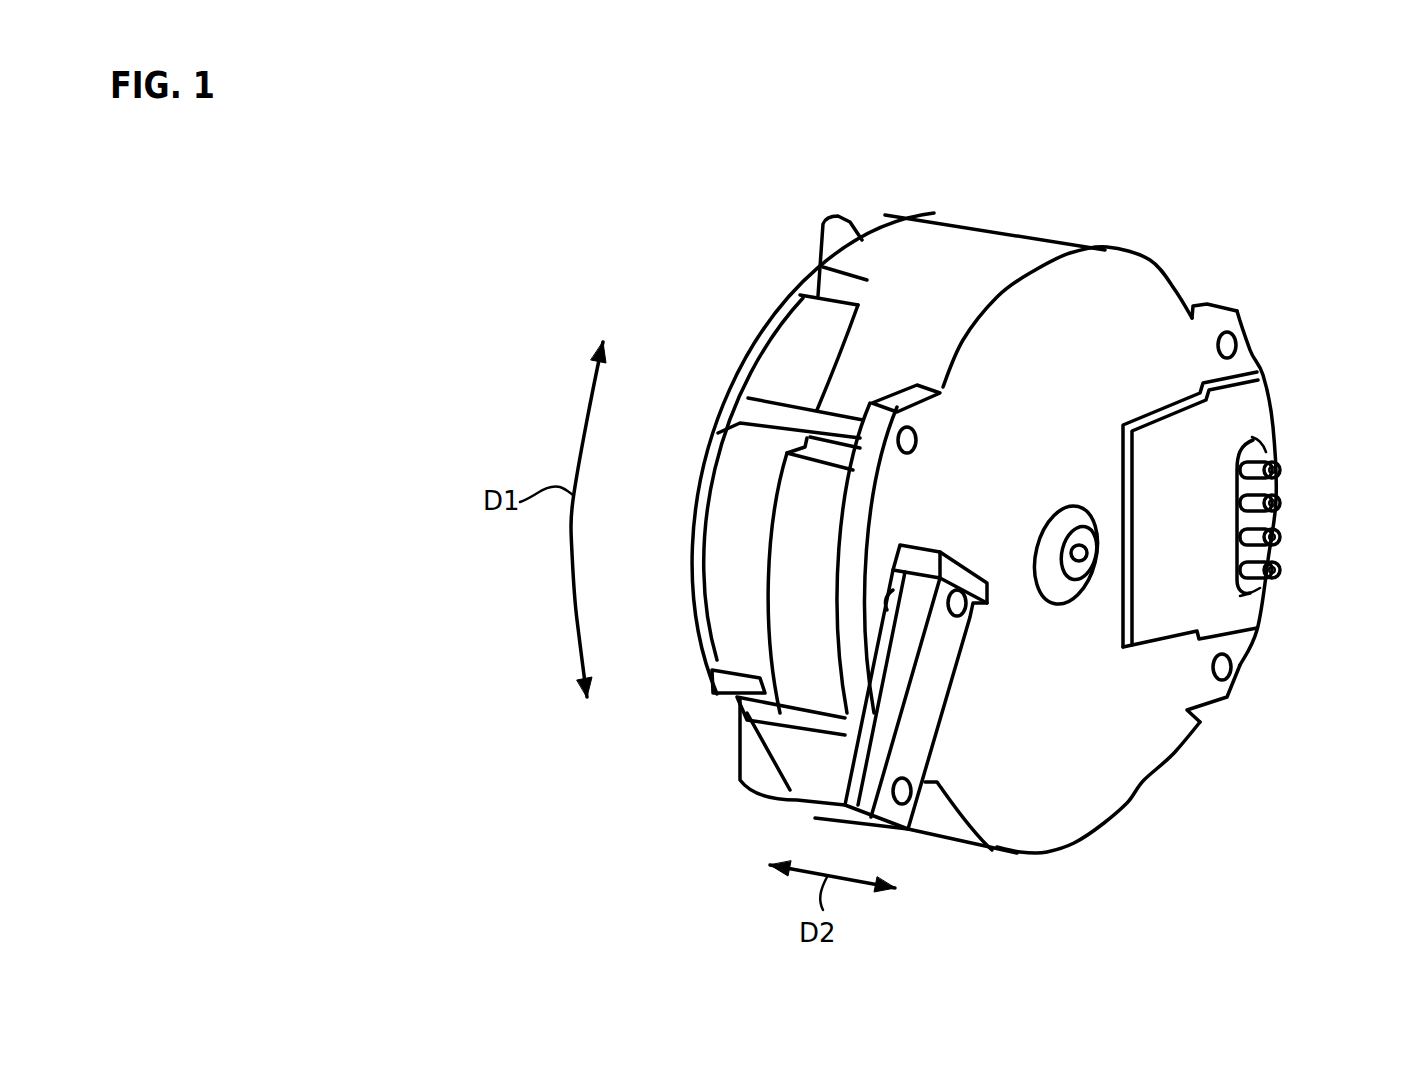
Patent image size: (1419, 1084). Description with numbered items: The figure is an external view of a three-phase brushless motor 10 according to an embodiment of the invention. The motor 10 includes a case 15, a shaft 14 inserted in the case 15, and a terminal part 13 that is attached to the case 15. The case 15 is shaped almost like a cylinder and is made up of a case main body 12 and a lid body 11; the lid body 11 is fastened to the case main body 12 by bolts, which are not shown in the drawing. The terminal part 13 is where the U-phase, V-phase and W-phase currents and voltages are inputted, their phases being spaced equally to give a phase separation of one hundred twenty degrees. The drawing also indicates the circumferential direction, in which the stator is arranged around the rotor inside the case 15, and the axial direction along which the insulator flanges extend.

The three-phase brushless motor 10 is at (1128, 156).
The lid body 11 is at (920, 232).
The case main body 12 is at (997, 253).
The terminal part 13 is at (1283, 508).
The shaft 14 is at (1080, 557).
The case 15 is at (1022, 147).